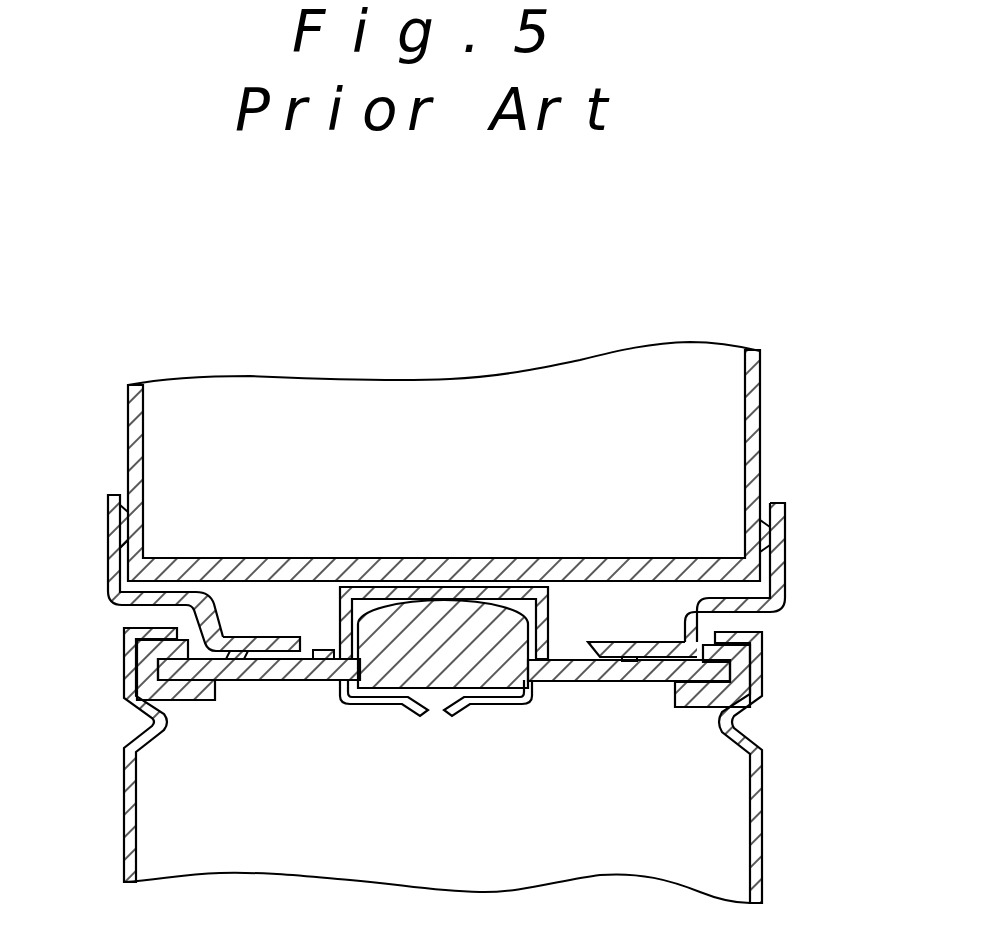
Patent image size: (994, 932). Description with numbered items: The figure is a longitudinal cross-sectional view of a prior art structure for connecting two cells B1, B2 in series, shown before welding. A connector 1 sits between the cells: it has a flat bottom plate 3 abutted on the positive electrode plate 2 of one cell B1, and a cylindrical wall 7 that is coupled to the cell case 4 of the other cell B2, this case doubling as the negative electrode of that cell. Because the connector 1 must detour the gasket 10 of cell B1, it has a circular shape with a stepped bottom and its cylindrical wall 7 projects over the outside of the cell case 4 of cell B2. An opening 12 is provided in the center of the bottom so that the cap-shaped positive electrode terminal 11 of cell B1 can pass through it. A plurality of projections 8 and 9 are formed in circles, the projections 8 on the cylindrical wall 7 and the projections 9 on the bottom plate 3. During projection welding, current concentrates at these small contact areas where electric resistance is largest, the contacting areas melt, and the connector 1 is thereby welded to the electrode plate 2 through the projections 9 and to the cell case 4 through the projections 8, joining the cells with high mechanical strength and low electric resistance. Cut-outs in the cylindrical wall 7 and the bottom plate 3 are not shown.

The connector 1 is at (449, 576).
The positive electrode plate 2 is at (292, 681).
The flat bottom plate 3 is at (290, 636).
The cell case 4 is at (464, 622).
The cylindrical wall 7 is at (108, 530).
The projections 8 is at (121, 533).
The projections 9 is at (255, 652).
The gasket 10 is at (697, 707).
The cap-shaped positive electrode terminal 11 is at (338, 610).
The opening 12 is at (587, 644).
The cell B1 is at (769, 860).
The cell B2 is at (770, 466).